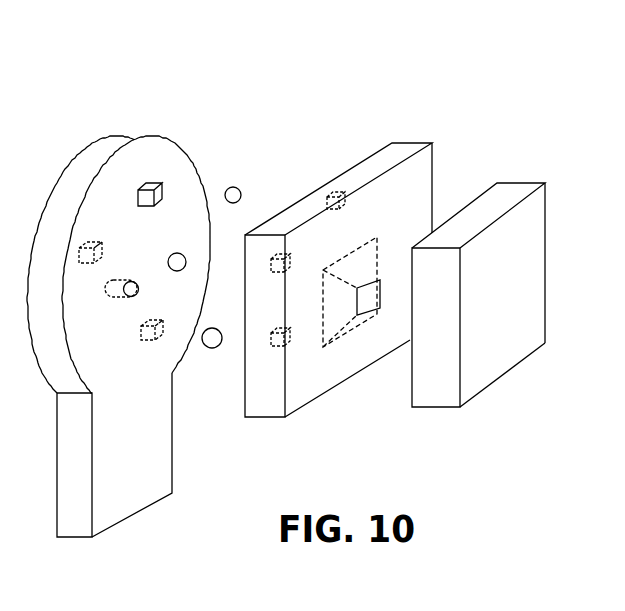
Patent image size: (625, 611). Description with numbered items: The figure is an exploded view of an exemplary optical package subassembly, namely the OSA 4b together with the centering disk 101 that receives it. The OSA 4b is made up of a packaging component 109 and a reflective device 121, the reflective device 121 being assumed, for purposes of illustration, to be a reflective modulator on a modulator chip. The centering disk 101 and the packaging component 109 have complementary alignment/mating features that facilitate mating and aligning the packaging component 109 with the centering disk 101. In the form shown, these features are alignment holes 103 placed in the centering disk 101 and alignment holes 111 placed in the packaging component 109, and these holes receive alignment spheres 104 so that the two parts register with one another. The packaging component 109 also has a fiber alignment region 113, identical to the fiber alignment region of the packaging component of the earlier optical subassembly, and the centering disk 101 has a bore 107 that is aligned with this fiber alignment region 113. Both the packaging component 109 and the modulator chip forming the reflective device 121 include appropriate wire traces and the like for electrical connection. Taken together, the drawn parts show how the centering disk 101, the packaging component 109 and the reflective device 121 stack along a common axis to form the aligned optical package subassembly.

The OSA 4b is at (286, 69).
The centering disk 101 is at (77, 182).
The alignment holes 103 is at (150, 183).
The alignment spheres 104 is at (178, 253).
The bore 107 is at (131, 298).
The packaging component 109 is at (402, 150).
The alignment holes 111 is at (326, 190).
The fiber alignment region 113 is at (343, 318).
The reflective device 121 is at (508, 185).